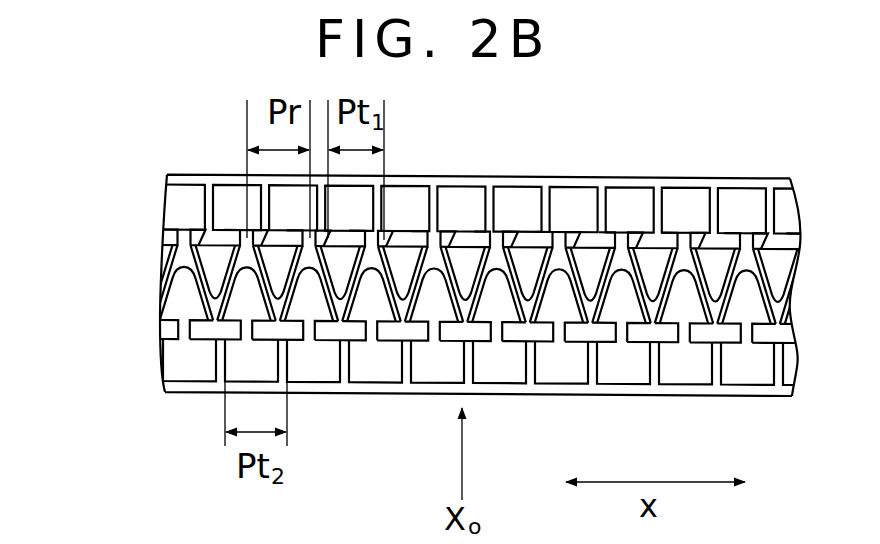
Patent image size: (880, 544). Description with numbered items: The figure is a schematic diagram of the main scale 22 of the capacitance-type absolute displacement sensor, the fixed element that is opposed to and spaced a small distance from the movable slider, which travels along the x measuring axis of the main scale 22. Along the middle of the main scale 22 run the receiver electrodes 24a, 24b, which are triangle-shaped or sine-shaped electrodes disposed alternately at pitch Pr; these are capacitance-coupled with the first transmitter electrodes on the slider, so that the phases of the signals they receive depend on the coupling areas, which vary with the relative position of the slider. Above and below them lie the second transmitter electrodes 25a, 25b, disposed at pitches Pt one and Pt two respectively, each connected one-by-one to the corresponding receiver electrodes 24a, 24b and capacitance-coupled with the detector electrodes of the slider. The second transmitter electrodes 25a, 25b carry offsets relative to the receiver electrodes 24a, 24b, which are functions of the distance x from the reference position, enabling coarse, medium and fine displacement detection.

The main scale 22 is at (148, 281).
The receiver electrode 24a is at (212, 253).
The receiver electrode 24b is at (162, 325).
The second transmitter electrode 25a is at (455, 198).
The second transmitter electrode 25b is at (376, 368).